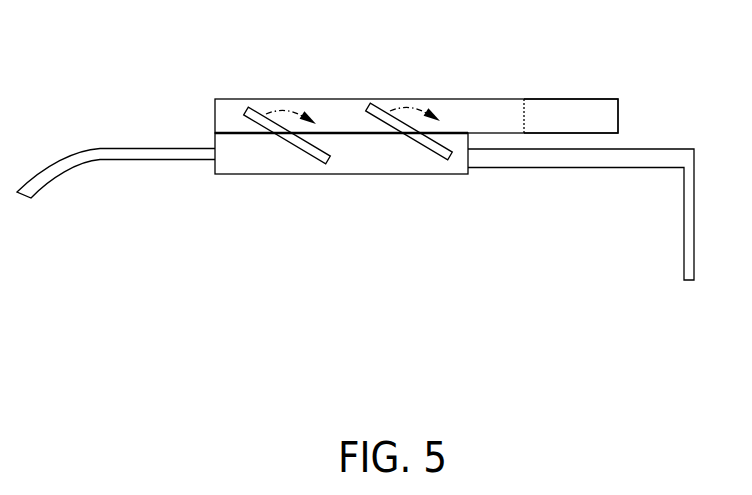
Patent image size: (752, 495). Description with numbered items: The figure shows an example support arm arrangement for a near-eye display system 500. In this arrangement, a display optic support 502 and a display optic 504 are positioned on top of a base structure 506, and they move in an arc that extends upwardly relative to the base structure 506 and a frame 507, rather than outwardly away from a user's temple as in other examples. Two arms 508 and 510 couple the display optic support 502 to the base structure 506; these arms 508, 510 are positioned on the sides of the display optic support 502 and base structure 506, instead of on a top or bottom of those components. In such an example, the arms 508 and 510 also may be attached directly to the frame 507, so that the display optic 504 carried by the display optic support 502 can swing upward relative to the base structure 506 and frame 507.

The near-eye display system 500 is at (295, 54).
The display optic support 502 is at (411, 99).
The display optic 504 is at (560, 99).
The base structure 506 is at (335, 176).
The frame 507 is at (665, 149).
The arm 508 is at (443, 156).
The arm 510 is at (282, 143).